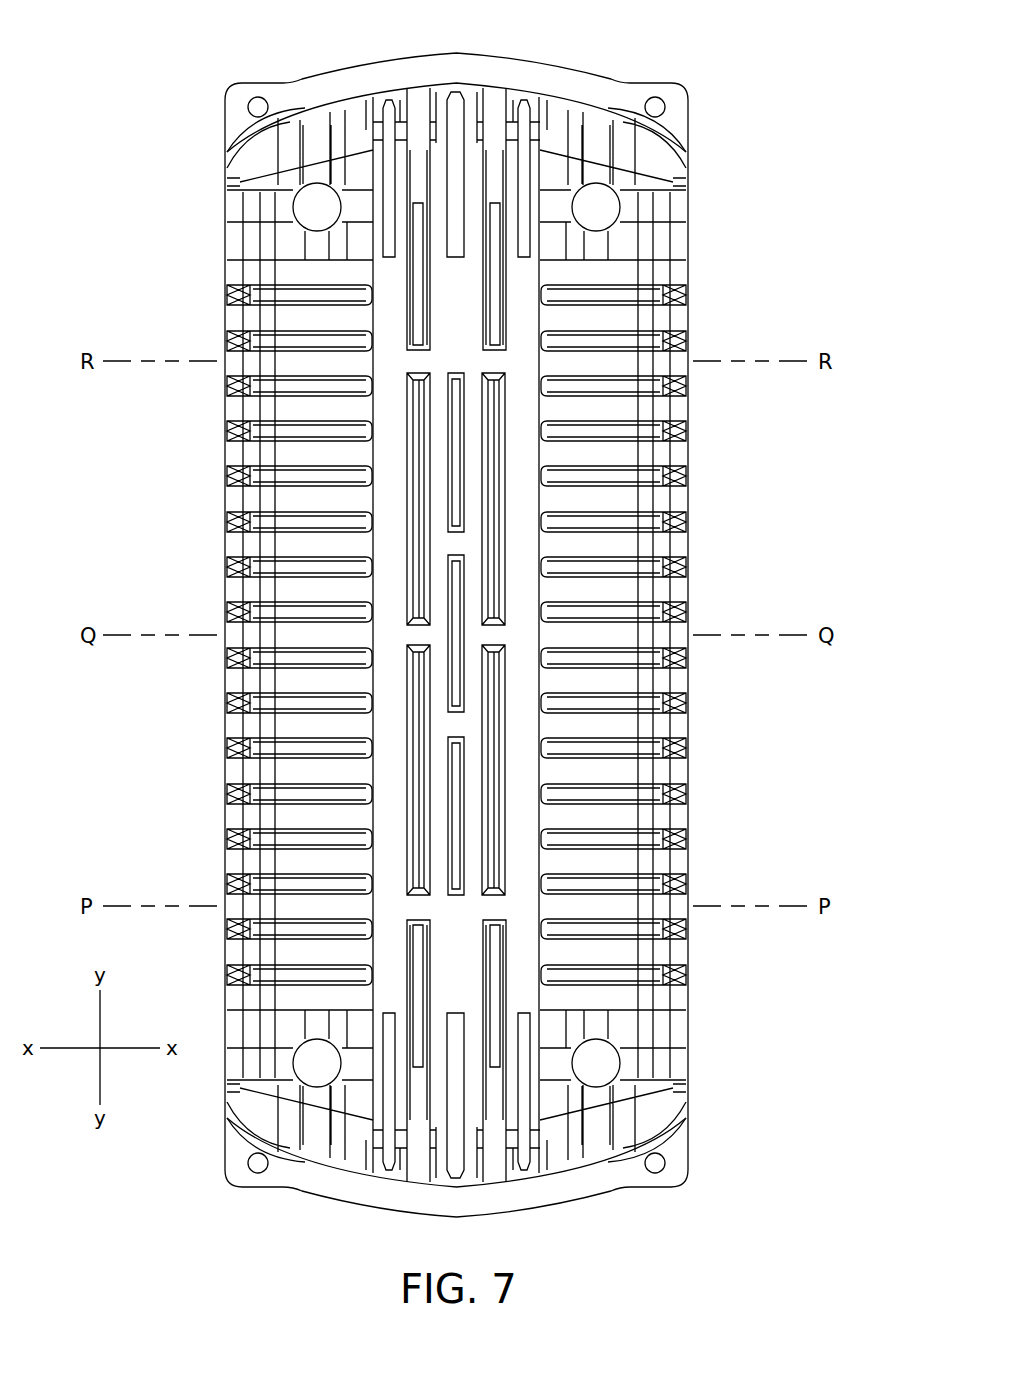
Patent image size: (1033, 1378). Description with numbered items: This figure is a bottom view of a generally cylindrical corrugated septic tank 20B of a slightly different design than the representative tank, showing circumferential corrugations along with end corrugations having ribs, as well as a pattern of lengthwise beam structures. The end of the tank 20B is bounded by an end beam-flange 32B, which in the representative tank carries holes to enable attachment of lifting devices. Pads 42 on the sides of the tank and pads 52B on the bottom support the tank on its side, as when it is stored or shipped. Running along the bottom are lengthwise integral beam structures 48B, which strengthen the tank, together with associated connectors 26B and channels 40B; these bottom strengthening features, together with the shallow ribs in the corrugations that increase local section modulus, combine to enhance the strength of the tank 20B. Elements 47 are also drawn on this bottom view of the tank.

The tank 20B is at (197, 160).
The end beam-flange 32B is at (362, 78).
The central ribs 47 is at (457, 93).
The pad 52B is at (317, 207).
The pad 42 is at (688, 201).
The lengthwise running integral beam structure 48B is at (387, 450).
The connector 26B is at (457, 727).
The channel 40B is at (490, 968).